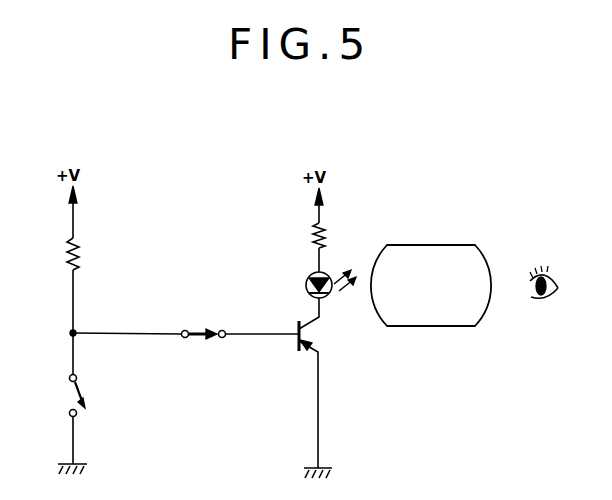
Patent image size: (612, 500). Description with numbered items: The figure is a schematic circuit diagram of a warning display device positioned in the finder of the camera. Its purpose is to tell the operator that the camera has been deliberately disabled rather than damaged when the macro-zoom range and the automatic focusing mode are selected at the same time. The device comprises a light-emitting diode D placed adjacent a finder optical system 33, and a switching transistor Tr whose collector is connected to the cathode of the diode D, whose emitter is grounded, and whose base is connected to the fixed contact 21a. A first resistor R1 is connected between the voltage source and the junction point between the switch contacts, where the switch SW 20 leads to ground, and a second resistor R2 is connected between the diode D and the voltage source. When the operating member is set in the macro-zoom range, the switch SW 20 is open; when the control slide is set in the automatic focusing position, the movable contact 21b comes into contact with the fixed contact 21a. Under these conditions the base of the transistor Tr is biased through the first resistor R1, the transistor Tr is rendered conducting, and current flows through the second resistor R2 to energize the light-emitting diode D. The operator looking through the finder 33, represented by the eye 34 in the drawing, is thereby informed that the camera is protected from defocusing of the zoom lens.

The first resistor R1 is at (86, 254).
The second resistor R2 is at (332, 237).
The switch SW20 20 is at (56, 396).
The fixed contact 21a is at (223, 330).
The movable contact 21b is at (195, 338).
The switching transistor Tr is at (318, 383).
The light-emitting diode D is at (324, 284).
The finder optical system 33 is at (431, 285).
The eye of observer 34 is at (548, 300).